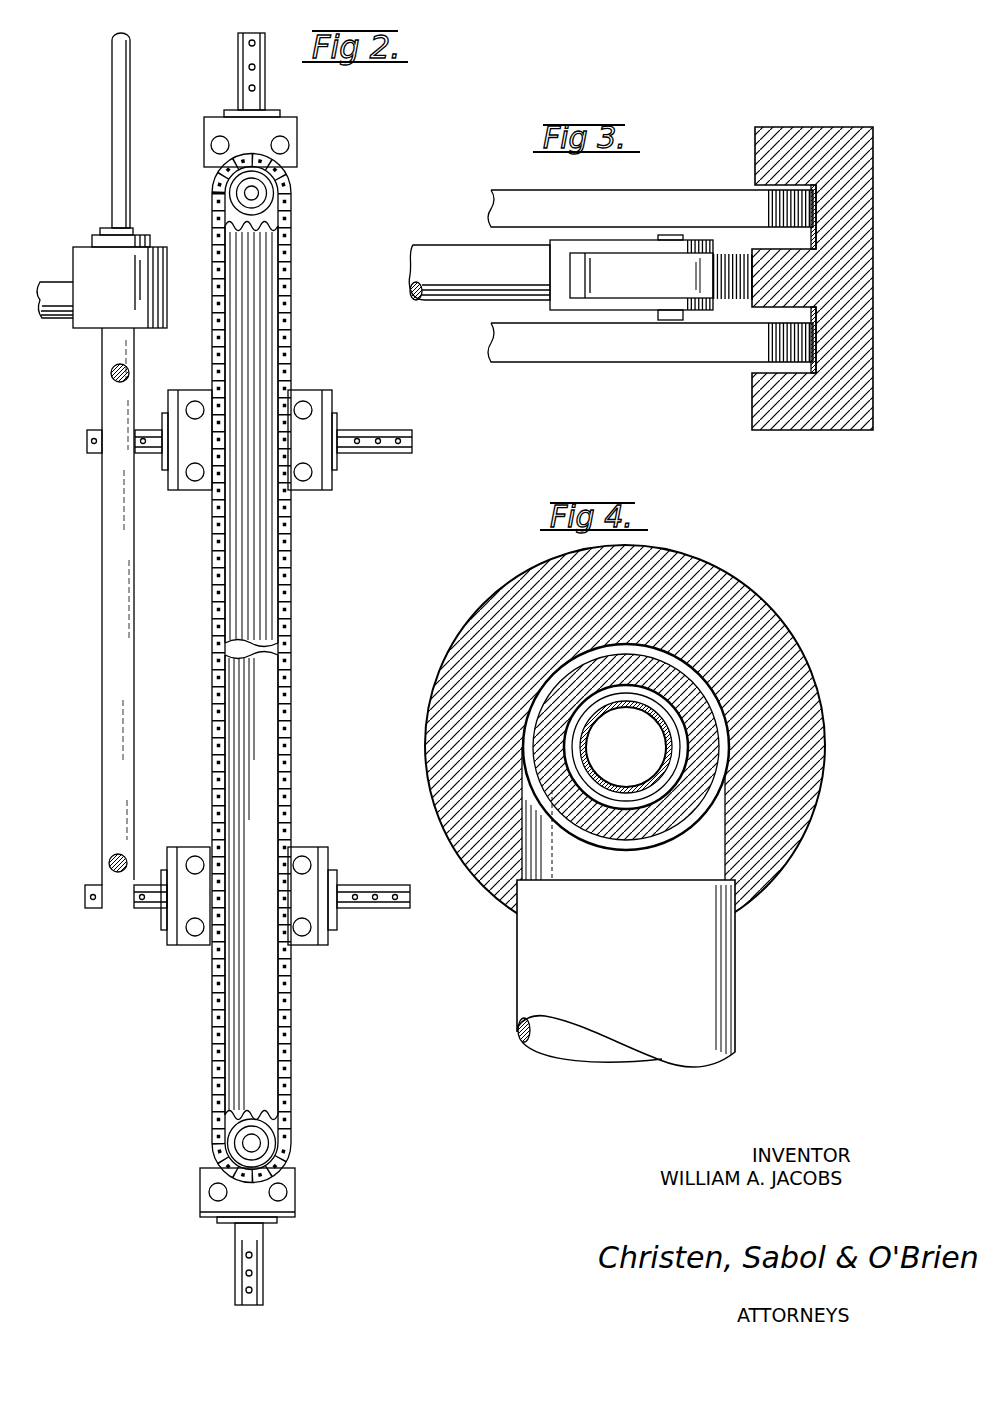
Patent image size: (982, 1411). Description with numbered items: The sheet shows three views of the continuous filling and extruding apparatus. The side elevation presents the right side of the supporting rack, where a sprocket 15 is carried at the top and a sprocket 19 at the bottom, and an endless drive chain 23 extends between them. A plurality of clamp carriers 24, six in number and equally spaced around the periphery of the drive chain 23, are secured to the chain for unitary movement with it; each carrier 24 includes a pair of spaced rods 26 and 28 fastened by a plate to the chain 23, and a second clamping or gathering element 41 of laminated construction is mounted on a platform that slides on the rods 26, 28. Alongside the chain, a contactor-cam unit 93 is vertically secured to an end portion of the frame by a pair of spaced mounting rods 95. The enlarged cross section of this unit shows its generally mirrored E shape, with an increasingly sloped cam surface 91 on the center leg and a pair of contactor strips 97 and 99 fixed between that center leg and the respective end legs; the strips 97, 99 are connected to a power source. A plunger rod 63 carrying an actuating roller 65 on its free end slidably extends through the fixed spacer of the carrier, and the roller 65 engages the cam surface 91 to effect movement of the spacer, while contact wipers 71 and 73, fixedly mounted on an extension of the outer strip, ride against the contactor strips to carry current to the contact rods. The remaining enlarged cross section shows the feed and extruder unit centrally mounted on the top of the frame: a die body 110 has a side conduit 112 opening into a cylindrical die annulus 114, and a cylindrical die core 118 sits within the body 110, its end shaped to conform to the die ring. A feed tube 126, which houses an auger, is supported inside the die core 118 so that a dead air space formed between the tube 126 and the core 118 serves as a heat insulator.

In FIG. 2, the sprocket 15 is at (268, 212).
In FIG. 2, the sprocket 19 is at (258, 1118).
In FIG. 2, the drive chain 23 is at (291, 718).
In FIG. 2, the clamp carrier 24 is at (183, 492).
In FIG. 2, the rod 26 is at (289, 145).
In FIG. 2, the rod 28 is at (302, 402).
In FIG. 2, the second clamping or gathering element 41 is at (265, 70).
In FIG. 3, the plunger rod 63 is at (453, 253).
In FIG. 3, the actuating roller 65 is at (646, 284).
In FIG. 3, the contact wiper 71 is at (552, 359).
In FIG. 3, the contact wiper 73 is at (625, 203).
In FIG. 3, the cam surface 91 is at (752, 302).
In FIG. 2, the contactor-cam unit 93 is at (133, 616).
In FIG. 3, the contactor-cam unit 93 is at (866, 222).
In FIG. 2, the mounting rod 95 is at (111, 373).
In FIG. 3, the contactor strip 97 is at (814, 372).
In FIG. 3, the contactor strip 99 is at (814, 188).
In FIG. 2, the die body 110 is at (122, 283).
In FIG. 4, the die body 110 is at (480, 880).
In FIG. 2, the side conduit 112 is at (58, 290).
In FIG. 4, the side conduit 112 is at (578, 1049).
In FIG. 4, the cylindrical die annulus 114 is at (567, 828).
In FIG. 4, the cylindrical die core 118 is at (683, 805).
In FIG. 4, the feed tube 126 is at (666, 757).